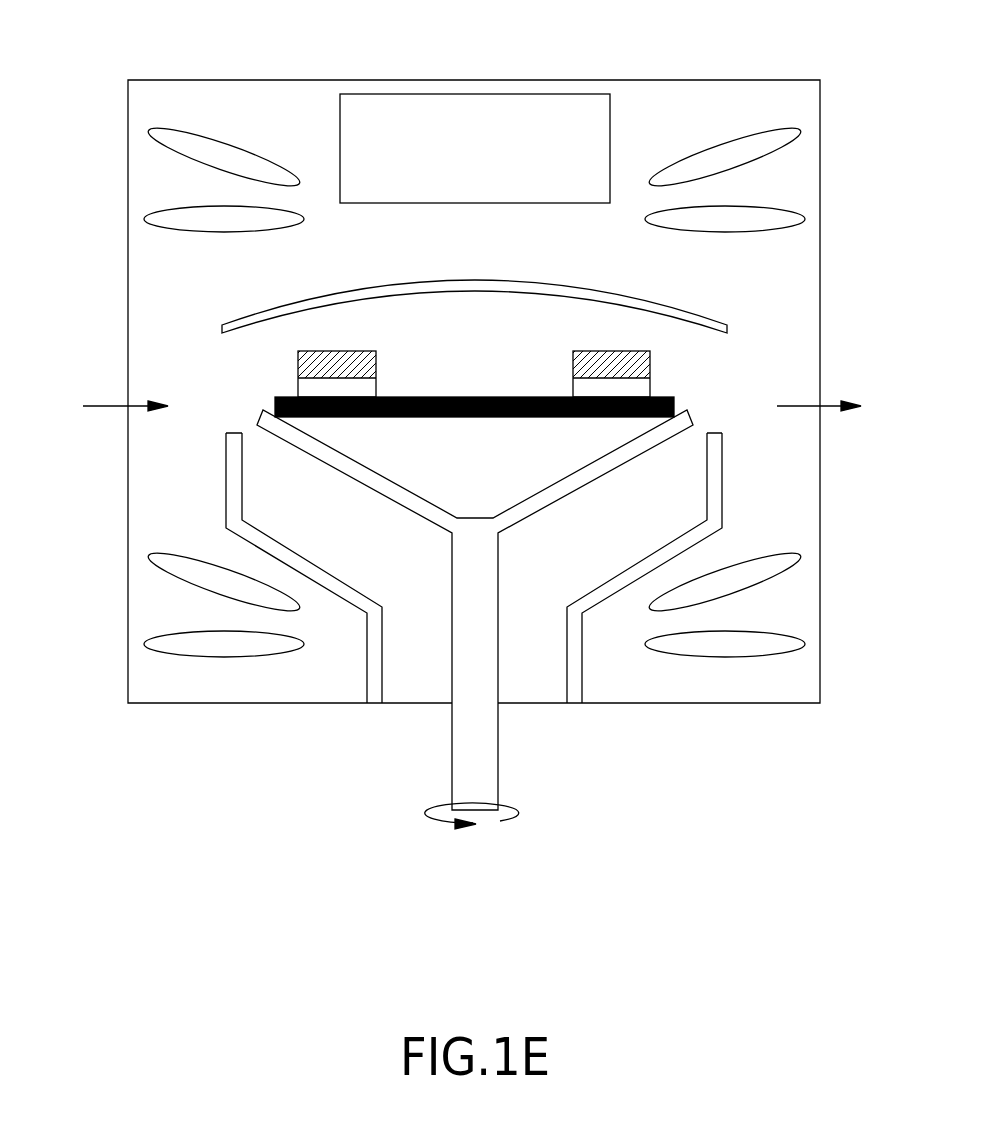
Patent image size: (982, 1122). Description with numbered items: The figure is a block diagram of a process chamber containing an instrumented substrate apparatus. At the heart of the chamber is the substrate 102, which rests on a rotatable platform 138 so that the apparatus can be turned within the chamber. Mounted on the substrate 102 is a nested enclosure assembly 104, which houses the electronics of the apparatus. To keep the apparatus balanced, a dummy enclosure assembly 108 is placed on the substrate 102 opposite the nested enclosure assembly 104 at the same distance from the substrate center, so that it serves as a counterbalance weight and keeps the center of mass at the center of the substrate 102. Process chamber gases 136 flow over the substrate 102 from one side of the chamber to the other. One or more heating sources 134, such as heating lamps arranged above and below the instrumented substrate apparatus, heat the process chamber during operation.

The substrate 102 is at (473, 397).
The nested enclosure assembly 104 is at (650, 360).
The dummy enclosure assembly 108 is at (300, 360).
The heating sources 134 is at (223, 220).
The process chamber gases 136 is at (117, 405).
The rotatable platform 138 is at (498, 757).